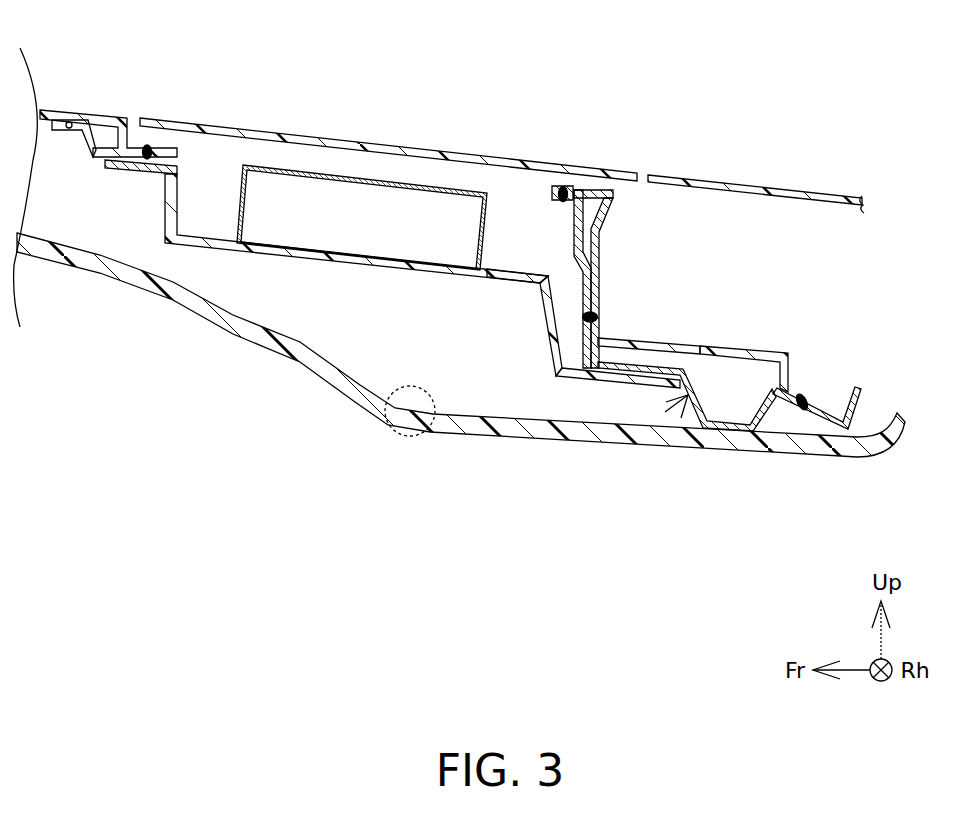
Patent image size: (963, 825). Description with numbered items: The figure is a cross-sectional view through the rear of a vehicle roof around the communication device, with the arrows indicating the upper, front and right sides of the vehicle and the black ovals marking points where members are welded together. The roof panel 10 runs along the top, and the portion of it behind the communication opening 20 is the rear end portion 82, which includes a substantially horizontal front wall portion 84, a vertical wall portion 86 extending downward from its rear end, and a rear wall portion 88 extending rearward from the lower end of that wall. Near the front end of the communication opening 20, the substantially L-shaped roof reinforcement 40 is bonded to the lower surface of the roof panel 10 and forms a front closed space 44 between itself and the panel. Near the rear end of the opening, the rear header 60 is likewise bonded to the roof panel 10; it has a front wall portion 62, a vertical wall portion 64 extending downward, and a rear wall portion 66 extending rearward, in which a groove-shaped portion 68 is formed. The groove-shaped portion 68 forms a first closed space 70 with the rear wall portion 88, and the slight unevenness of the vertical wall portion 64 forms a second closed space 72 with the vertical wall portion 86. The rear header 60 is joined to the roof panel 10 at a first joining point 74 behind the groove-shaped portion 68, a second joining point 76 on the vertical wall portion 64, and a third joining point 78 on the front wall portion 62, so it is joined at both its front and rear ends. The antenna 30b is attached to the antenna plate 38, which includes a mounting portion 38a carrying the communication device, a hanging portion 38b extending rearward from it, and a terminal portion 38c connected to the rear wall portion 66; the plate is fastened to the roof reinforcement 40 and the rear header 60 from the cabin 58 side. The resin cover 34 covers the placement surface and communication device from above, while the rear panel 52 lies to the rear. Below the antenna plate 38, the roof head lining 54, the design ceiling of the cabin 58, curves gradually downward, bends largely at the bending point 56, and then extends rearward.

The roof panel 10 is at (77, 108).
The front closed space 44 is at (113, 135).
The roof reinforcement 40 is at (86, 150).
The communication opening 20 is at (180, 152).
The antenna plate 38 is at (337, 272).
The mounting portion 38a is at (507, 284).
The hanging portion 38b is at (550, 352).
The terminal portion 38c is at (600, 387).
The antenna 30b is at (300, 168).
The resin cover 34 is at (462, 152).
The rear panel 52 is at (820, 192).
The front wall portion 62 is at (560, 208).
The third joining point 78 is at (565, 188).
The second closed space 72 is at (631, 238).
The front wall portion 84 is at (598, 189).
The vertical wall portion 86 is at (600, 247).
The vertical wall portion 64 is at (574, 236).
The second joining point 76 is at (594, 312).
The rear wall portion 66 is at (667, 338).
The rear wall portion 88 is at (773, 348).
The rear end portion 82 is at (697, 325).
The groove-shaped portion 68 is at (745, 440).
The first joining point 74 is at (806, 396).
The first closed space 70 is at (746, 401).
The rear header 60 is at (665, 412).
The roof head lining 54 is at (210, 315).
The bending point 56 is at (410, 437).
The cabin 58 is at (306, 537).